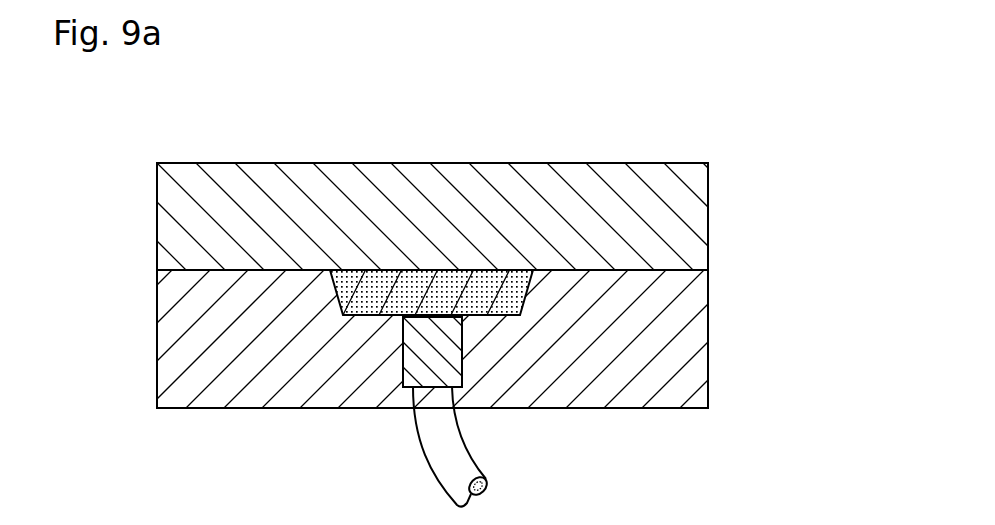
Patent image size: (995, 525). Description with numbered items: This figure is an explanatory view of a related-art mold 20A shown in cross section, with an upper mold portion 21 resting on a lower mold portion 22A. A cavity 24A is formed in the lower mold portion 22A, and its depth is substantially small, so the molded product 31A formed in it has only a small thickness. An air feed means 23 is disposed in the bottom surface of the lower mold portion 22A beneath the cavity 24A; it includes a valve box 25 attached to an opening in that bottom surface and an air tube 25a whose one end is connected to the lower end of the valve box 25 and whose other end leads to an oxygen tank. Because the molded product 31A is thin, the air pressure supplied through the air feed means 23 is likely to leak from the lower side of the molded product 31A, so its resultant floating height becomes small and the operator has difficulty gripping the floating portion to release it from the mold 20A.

The mold 20A is at (731, 222).
The upper block 21 is at (665, 163).
The lower mold portion 22A is at (710, 343).
The cavity 24A is at (350, 273).
The molded product 31A is at (437, 273).
The valve box 25 is at (462, 360).
The air feed means 23 is at (402, 428).
The air tube 25a is at (427, 467).